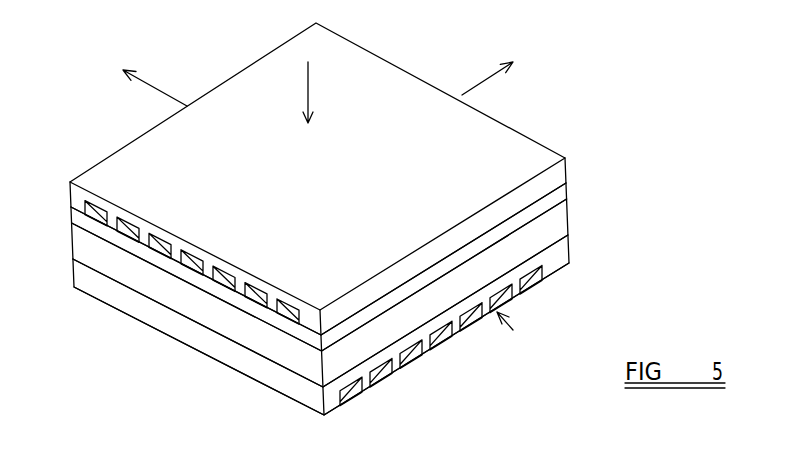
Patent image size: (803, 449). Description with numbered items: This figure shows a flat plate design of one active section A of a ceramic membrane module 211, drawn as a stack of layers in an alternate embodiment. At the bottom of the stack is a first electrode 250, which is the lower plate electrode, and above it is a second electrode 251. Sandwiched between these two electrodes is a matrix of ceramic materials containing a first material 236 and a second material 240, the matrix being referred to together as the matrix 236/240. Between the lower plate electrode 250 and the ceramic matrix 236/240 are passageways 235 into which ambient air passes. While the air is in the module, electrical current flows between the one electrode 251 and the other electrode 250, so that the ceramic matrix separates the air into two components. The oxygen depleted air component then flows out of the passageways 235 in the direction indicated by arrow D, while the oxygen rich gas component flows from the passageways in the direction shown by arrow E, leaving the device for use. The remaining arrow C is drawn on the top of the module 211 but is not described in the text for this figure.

The ceramic membrane module 211 is at (393, 51).
The second electrode 251 is at (433, 275).
The first material 236 is at (315, 305).
The second material 240 is at (205, 315).
The first electrode 250 is at (268, 372).
The passageways 235 is at (413, 345).
The arrow D is at (163, 90).
The flow direction C is at (308, 78).
The arrow E is at (478, 84).
The active section A is at (513, 330).